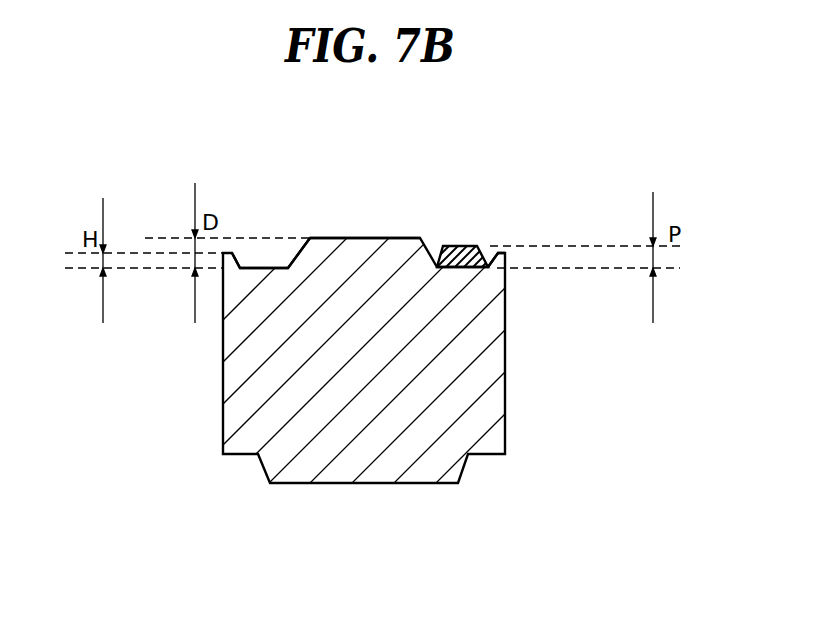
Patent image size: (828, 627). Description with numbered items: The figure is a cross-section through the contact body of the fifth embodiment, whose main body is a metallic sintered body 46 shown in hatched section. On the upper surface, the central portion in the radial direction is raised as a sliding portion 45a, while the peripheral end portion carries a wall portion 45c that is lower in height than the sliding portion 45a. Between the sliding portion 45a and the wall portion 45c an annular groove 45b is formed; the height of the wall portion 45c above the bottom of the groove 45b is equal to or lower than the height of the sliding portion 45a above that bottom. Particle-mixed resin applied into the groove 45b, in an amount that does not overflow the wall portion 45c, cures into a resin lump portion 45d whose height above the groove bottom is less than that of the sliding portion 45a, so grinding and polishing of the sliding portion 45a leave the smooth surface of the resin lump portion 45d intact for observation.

The sliding portion 45a is at (350, 238).
The groove 45b is at (273, 267).
The wall portion 45c is at (502, 246).
The resin lump portion 45d is at (480, 246).
The metallic sintered body 46 is at (487, 400).